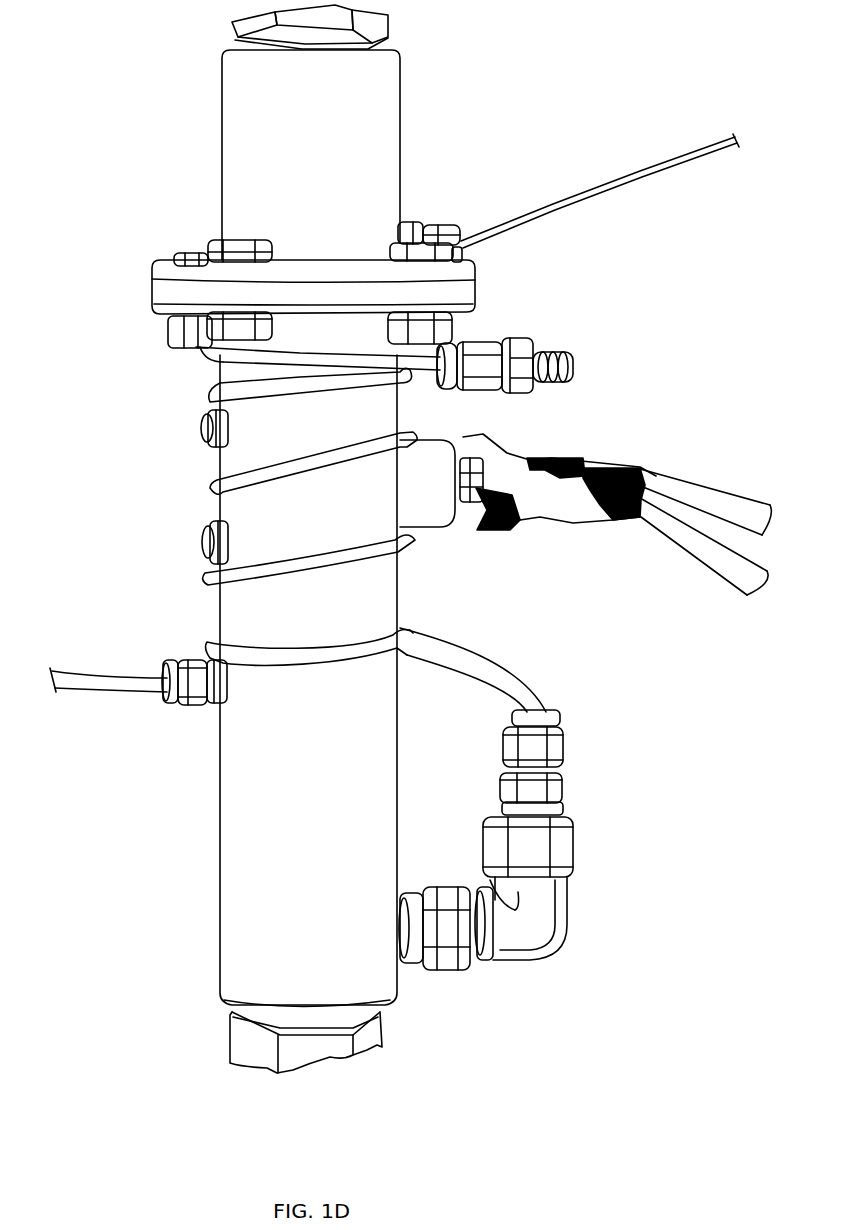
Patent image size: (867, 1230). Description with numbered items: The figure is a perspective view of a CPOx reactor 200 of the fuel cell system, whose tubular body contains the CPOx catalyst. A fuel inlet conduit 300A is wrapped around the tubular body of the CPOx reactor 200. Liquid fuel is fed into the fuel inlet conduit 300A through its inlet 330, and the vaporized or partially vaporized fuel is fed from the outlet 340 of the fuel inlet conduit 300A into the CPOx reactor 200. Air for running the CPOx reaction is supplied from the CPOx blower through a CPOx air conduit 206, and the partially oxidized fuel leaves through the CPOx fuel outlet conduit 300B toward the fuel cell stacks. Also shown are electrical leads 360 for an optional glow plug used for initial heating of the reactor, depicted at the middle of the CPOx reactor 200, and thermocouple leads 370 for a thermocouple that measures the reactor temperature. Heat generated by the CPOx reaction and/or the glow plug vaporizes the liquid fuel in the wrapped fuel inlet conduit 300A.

The CPOx reactor 200 is at (330, 797).
The CPOx air conduit 206 is at (387, 1033).
The fuel inlet conduit 300A is at (210, 490).
The CPOx fuel outlet conduit 300B is at (205, 50).
The inlet 330 is at (558, 338).
The outlet 340 is at (584, 747).
The electrical leads 360 is at (718, 494).
The thermocouple leads 370 is at (607, 172).